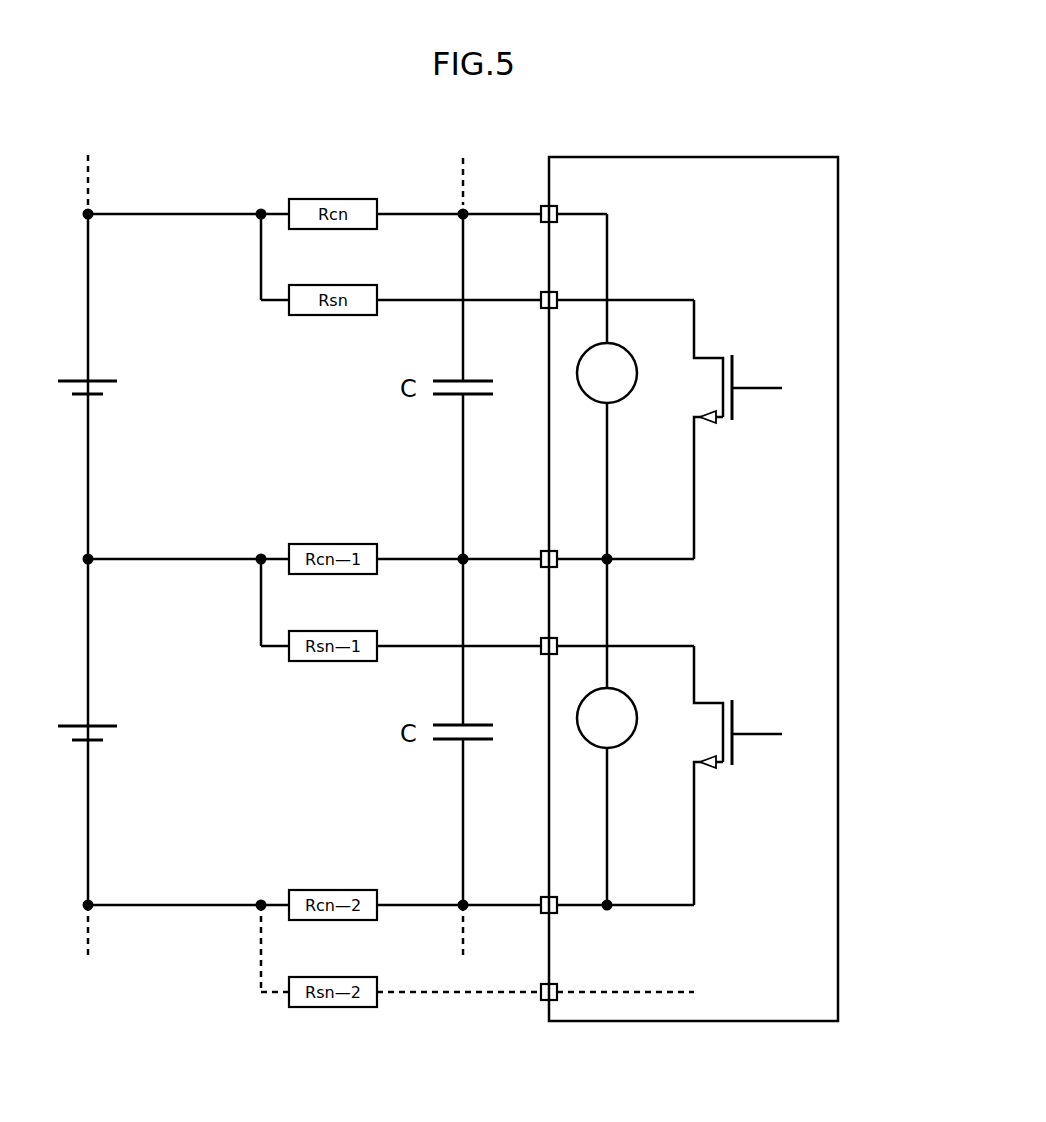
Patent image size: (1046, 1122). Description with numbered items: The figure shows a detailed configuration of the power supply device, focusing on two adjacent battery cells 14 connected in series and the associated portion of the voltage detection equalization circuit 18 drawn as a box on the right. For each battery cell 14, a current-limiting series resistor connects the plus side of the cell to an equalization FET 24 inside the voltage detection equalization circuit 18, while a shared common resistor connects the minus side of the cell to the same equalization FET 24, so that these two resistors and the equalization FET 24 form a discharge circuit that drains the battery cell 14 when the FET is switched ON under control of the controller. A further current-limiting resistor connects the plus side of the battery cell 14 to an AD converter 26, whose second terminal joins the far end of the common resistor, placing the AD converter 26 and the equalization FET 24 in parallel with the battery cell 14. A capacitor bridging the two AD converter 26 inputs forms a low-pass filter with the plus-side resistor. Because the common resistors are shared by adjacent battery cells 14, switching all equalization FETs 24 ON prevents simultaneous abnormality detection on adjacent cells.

The battery cell 14 is at (124, 400).
The voltage detection equalization circuit 18 is at (800, 157).
The equalization FET 24 is at (758, 349).
The AD converter 26 is at (628, 351).